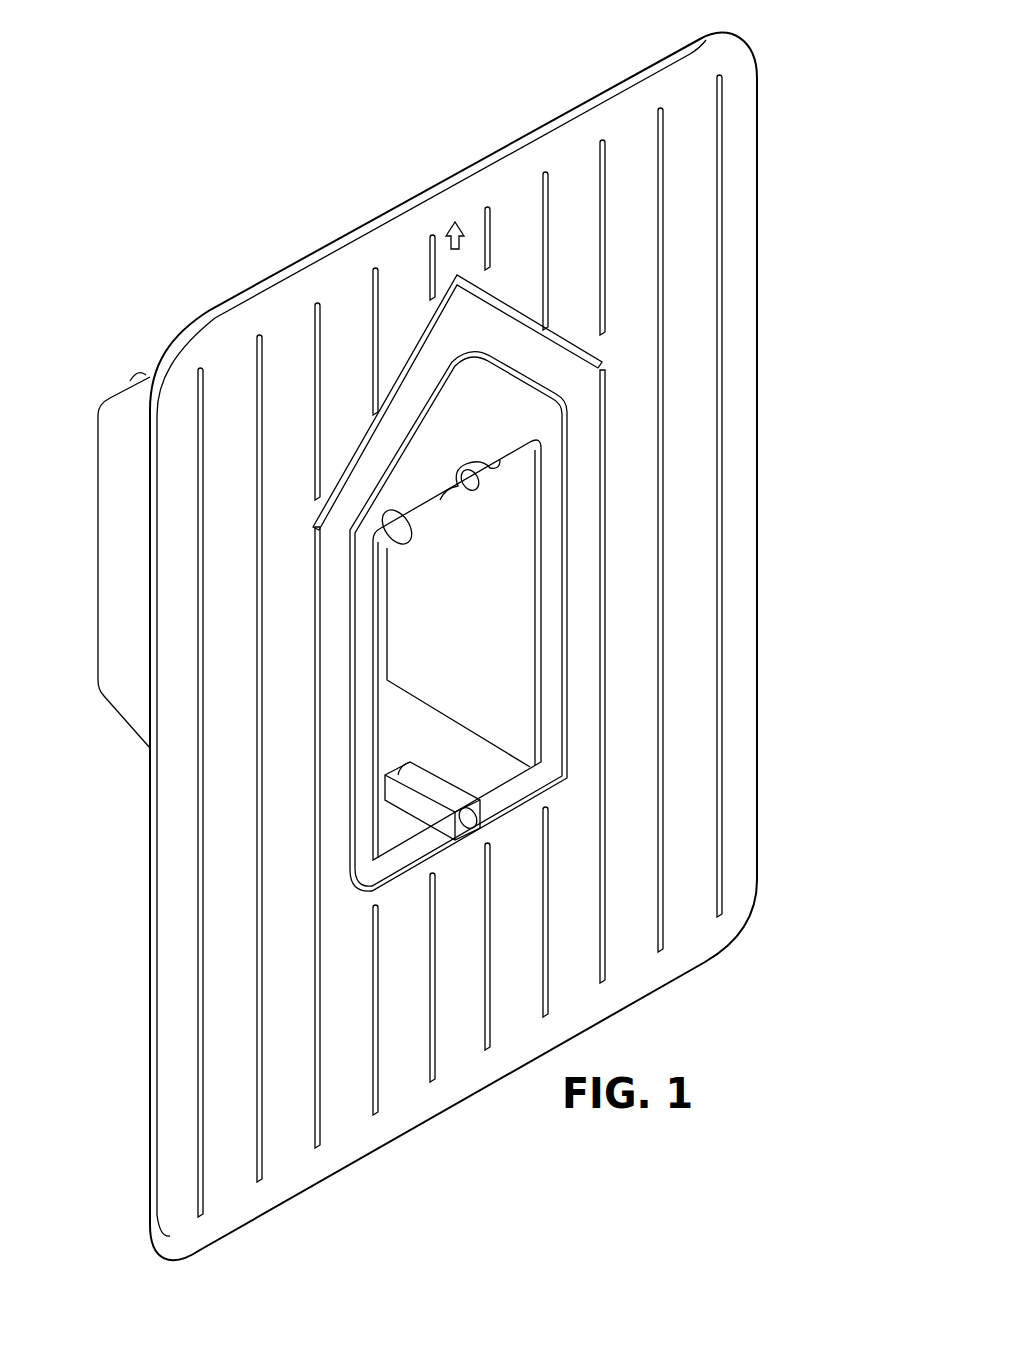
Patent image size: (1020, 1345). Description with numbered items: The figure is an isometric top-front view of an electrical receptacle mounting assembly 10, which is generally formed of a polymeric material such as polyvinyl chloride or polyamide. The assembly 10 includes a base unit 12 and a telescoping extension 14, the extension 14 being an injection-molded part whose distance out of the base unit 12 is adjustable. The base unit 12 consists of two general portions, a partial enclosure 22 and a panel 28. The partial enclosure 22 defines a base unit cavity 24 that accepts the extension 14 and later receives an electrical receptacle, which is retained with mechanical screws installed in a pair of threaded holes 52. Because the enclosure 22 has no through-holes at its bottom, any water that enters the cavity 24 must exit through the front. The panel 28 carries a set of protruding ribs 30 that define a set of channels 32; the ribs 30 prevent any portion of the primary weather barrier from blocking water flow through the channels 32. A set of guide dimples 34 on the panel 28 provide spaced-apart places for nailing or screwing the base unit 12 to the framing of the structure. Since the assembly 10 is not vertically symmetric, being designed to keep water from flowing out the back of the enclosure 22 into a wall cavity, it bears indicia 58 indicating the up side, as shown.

The electrical receptacle mounting assembly 10 is at (330, 192).
The base unit 12 is at (768, 258).
The telescoping extension 14 is at (574, 592).
The partial enclosure 22 is at (97, 553).
The base unit cavity 24 is at (459, 649).
The panel 28 is at (762, 466).
The protruding ribs 30 is at (207, 692).
The channels 32 is at (244, 533).
The guide dimples 34 is at (630, 250).
The threaded holes 52 is at (471, 494).
The indicia 58 is at (642, 99).